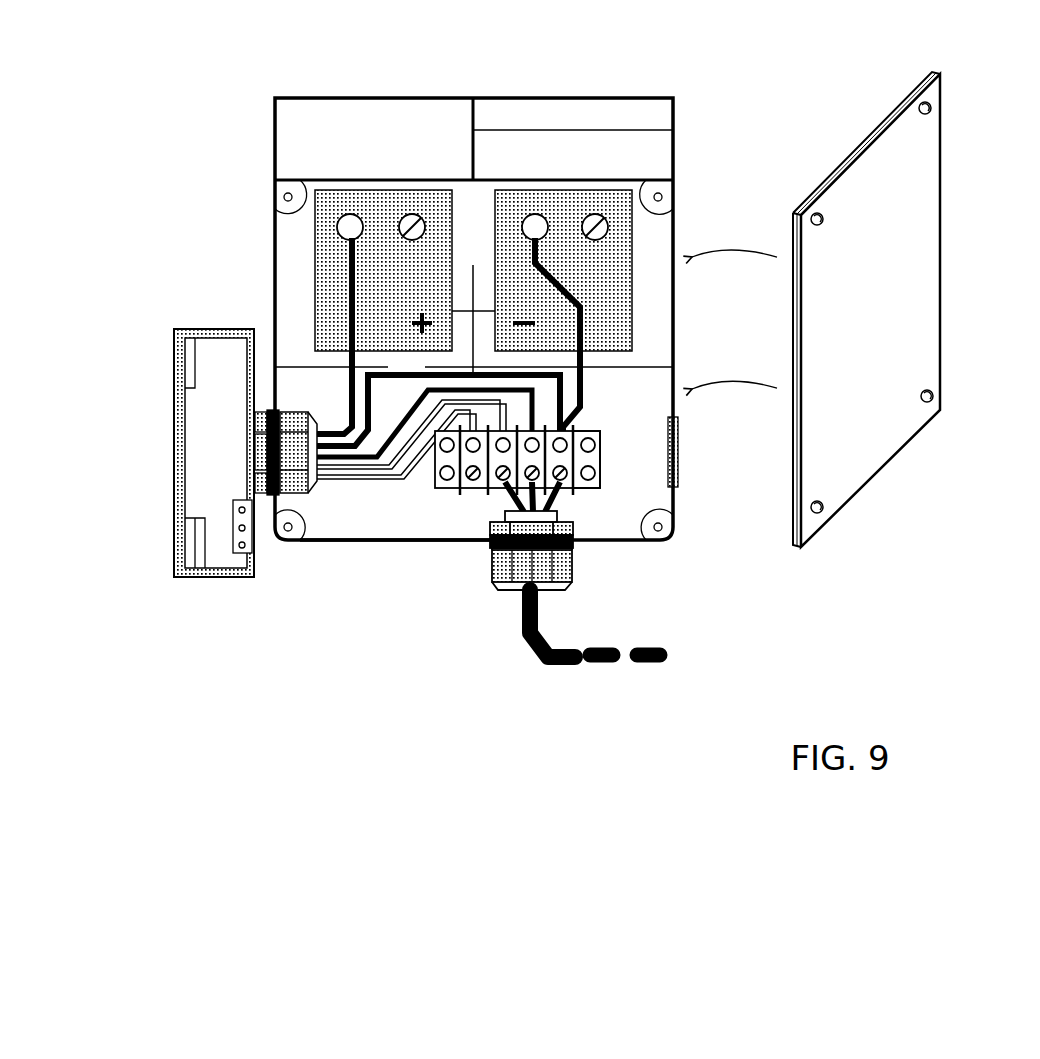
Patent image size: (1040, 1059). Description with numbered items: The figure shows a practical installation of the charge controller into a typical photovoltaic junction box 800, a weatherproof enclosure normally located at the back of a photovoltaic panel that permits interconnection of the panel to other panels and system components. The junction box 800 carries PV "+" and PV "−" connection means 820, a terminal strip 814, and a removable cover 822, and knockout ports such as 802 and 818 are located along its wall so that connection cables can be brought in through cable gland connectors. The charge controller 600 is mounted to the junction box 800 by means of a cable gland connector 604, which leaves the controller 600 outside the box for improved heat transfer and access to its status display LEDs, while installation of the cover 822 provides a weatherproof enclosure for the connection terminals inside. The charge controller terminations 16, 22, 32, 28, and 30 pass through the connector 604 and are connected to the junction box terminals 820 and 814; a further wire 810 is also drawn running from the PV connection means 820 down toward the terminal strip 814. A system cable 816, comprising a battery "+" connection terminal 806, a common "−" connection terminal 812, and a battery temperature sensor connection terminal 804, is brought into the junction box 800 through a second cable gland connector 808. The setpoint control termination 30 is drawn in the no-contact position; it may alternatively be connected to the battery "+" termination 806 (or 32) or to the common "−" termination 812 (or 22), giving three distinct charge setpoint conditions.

The charge controller termination 16 is at (350, 395).
The common "−" termination 22 is at (437, 374).
The charge controller termination 28 is at (408, 462).
The setpoint control termination 30 is at (366, 480).
The battery "+" termination 32 is at (428, 396).
The charge controller 600 is at (217, 326).
The cable gland connector 604 is at (265, 500).
The photovoltaic junction box 800 is at (270, 234).
The knockout port 802 is at (405, 543).
The battery temperature sensor connection terminal 804 is at (507, 490).
The battery "+" connection terminal 806 is at (556, 504).
The cable gland connector 808 is at (572, 562).
The negative wire 810 is at (587, 374).
The common "−" connection terminal 812 is at (582, 462).
The terminal strip 814 is at (603, 468).
The system cable 816 is at (670, 652).
The knockout port 818 is at (680, 453).
The PV "+" and PV "−" connection means 820 is at (388, 202).
The removable cover 822 is at (944, 269).